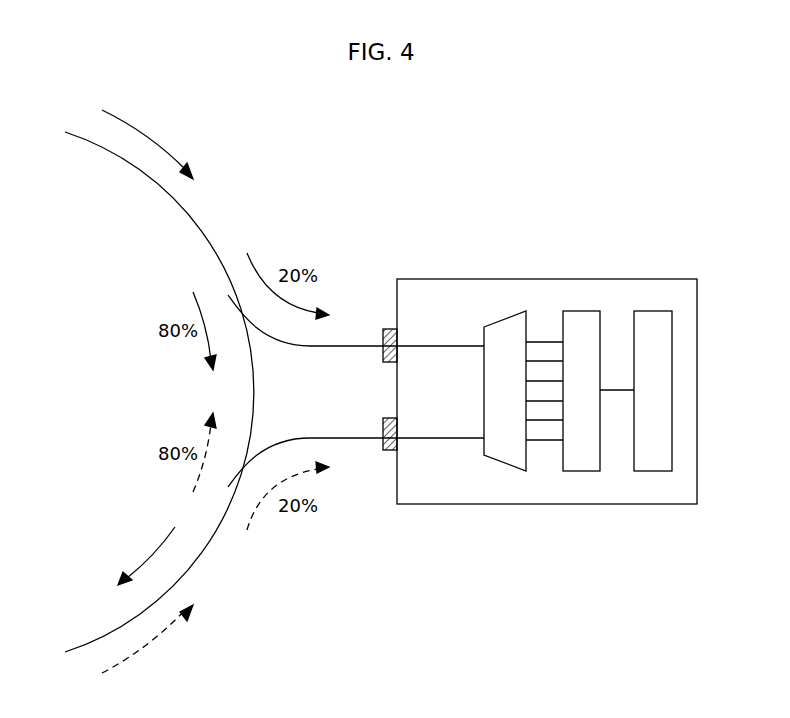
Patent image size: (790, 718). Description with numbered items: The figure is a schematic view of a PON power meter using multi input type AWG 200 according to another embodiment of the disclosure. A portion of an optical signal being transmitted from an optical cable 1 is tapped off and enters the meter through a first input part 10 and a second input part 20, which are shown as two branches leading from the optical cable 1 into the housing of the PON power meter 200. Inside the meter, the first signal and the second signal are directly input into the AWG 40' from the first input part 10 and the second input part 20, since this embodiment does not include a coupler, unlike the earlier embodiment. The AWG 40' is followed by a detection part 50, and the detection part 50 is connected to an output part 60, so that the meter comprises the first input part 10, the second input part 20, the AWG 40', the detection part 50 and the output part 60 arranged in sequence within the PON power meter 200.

The optical cable 1 is at (202, 236).
The first input part 10 is at (383, 329).
The second input part 20 is at (383, 451).
The PON power meter using multi input type AWG 200 is at (440, 279).
The AWG 40' is at (505, 341).
The detection part 50 is at (588, 311).
The output part 60 is at (655, 311).